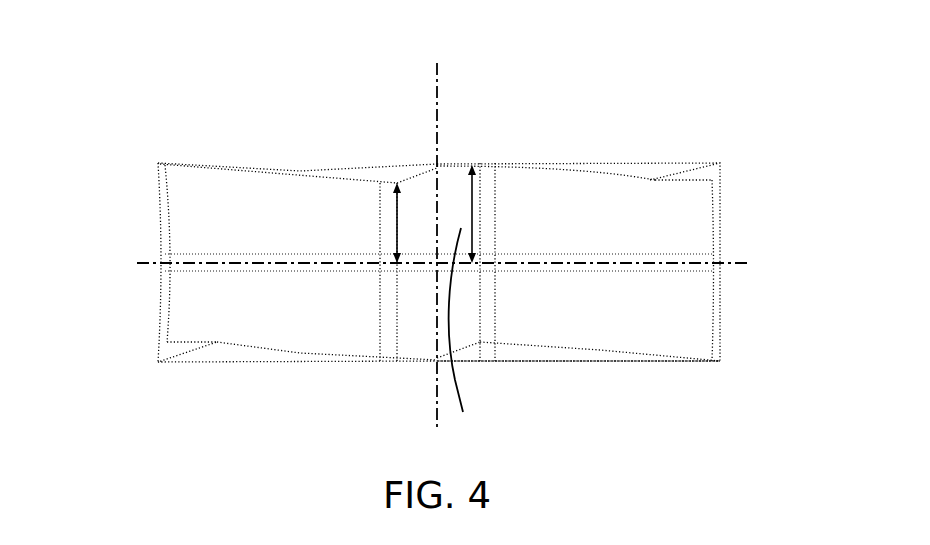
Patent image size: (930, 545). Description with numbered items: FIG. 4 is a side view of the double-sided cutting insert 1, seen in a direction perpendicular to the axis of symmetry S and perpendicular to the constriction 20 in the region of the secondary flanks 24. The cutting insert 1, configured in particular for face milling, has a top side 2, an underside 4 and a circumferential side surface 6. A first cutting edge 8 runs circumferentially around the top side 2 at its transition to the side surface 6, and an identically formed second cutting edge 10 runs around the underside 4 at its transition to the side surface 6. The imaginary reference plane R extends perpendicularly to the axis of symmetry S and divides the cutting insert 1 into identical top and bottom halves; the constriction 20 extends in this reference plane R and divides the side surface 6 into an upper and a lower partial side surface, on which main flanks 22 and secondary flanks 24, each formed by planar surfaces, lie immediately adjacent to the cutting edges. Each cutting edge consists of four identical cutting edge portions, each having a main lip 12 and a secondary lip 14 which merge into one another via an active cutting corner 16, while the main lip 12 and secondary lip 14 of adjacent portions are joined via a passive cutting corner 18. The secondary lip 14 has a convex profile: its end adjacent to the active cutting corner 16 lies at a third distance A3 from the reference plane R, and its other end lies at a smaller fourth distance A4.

The double-sided cutting insert 1 is at (133, 87).
The top side 2 is at (647, 177).
The underside 4 is at (220, 350).
The circumferential side surface 6 is at (150, 231).
The first cutting edge 8 is at (212, 163).
The second cutting edge 10 is at (635, 355).
The main lip 12 is at (557, 168).
The secondary lip 14 is at (443, 167).
The active cutting corner 16 is at (488, 165).
The passive cutting corner 18 is at (388, 183).
The constriction 20 is at (670, 270).
The main flank 22 is at (193, 212).
The secondary flank 24 is at (460, 330).
The third distance A3 is at (470, 197).
The fourth distance A4 is at (417, 205).
The axis of symmetry S is at (438, 94).
The reference plane R is at (735, 263).